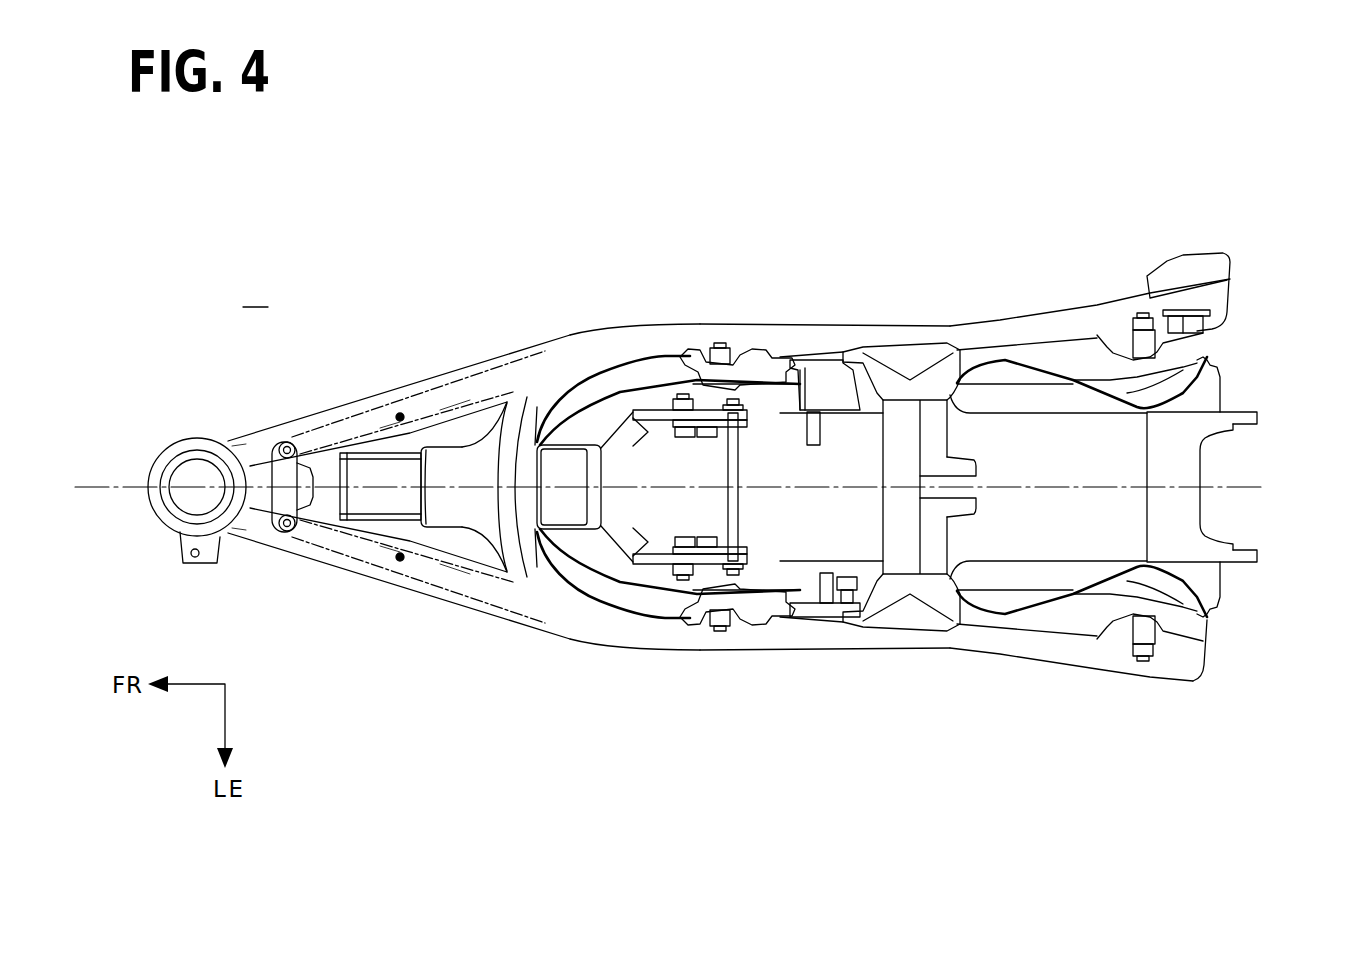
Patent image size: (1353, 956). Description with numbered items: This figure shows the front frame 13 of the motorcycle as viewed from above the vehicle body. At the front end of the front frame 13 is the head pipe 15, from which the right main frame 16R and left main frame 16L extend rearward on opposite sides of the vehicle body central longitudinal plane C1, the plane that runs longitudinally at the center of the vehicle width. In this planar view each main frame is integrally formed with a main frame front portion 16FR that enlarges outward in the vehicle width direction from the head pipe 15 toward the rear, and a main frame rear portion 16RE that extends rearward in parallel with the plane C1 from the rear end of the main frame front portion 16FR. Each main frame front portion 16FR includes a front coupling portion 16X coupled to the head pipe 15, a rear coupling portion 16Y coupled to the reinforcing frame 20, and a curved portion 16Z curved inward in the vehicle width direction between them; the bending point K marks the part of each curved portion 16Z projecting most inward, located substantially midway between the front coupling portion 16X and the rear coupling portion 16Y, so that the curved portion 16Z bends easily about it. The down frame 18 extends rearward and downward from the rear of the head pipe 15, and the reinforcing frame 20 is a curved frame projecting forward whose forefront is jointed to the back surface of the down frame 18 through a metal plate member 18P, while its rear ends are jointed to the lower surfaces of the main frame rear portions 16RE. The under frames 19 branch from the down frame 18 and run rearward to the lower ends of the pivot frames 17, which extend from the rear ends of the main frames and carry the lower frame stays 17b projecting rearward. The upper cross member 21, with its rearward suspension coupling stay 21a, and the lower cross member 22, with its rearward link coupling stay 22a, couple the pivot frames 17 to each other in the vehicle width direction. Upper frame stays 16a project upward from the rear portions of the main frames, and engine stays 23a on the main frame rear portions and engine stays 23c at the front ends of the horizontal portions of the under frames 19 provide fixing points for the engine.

The front frame 13 is at (255, 294).
The head pipe 15 is at (171, 442).
The right main frame 16R is at (291, 423).
The left main frame 16L is at (283, 549).
The front coupling portion 16X is at (242, 446).
The curved portion 16Z is at (382, 460).
The main frame front portion 16FR is at (456, 377).
The rear coupling portion 16Y is at (581, 341).
The main frame rear portion 16RE is at (711, 325).
The upper frame stay 16a is at (746, 348).
The pivot frame 17 is at (1068, 308).
The lower frame stay 17b is at (1128, 345).
The down frame 18 is at (361, 398).
The metal plate member 18P is at (475, 457).
The under frame 19 is at (628, 380).
The reinforcing frame 20 is at (520, 405).
The upper cross member 21 is at (893, 477).
The suspension coupling stay 21a is at (977, 464).
The lower cross member 22 is at (1178, 493).
The link coupling stay 22a is at (1262, 431).
The engine stay 23a is at (831, 385).
The engine stay 23c is at (676, 398).
The bending point K is at (398, 413).
The vehicle body central longitudinal plane C1 is at (104, 483).